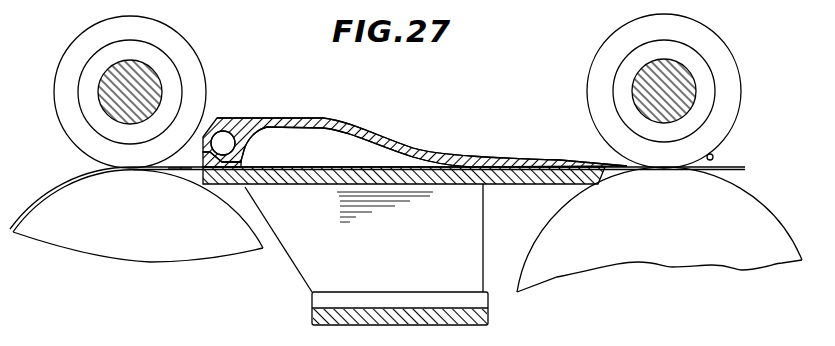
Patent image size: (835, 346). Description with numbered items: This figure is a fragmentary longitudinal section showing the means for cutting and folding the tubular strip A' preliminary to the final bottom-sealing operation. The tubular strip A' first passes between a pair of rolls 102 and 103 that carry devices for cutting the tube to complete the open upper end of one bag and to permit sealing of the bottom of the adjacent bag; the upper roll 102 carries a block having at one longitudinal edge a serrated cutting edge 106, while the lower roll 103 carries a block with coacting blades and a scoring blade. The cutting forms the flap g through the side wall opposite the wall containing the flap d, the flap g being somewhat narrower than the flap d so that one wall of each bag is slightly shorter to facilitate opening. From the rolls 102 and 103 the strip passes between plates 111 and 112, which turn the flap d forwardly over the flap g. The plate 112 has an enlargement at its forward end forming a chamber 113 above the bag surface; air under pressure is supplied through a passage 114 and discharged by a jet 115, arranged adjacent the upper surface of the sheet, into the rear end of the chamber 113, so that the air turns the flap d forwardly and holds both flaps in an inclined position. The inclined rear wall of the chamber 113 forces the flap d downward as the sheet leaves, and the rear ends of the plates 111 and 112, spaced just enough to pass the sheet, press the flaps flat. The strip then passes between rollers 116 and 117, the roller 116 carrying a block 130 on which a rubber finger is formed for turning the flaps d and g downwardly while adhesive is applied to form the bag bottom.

The upper roll 102 is at (186, 62).
The roller 116 is at (720, 52).
The serrated cutting edge 106 is at (203, 133).
The passage 114 is at (224, 131).
The jet 115 is at (244, 154).
The plate 112 is at (292, 118).
The chamber 113 is at (328, 145).
The plate 111 is at (358, 183).
The tubular strip A' is at (377, 169).
The roll 103 is at (160, 240).
The roller 117 is at (754, 207).
The block 130 is at (714, 157).
The flap d is at (172, 167).
The flap g is at (185, 169).